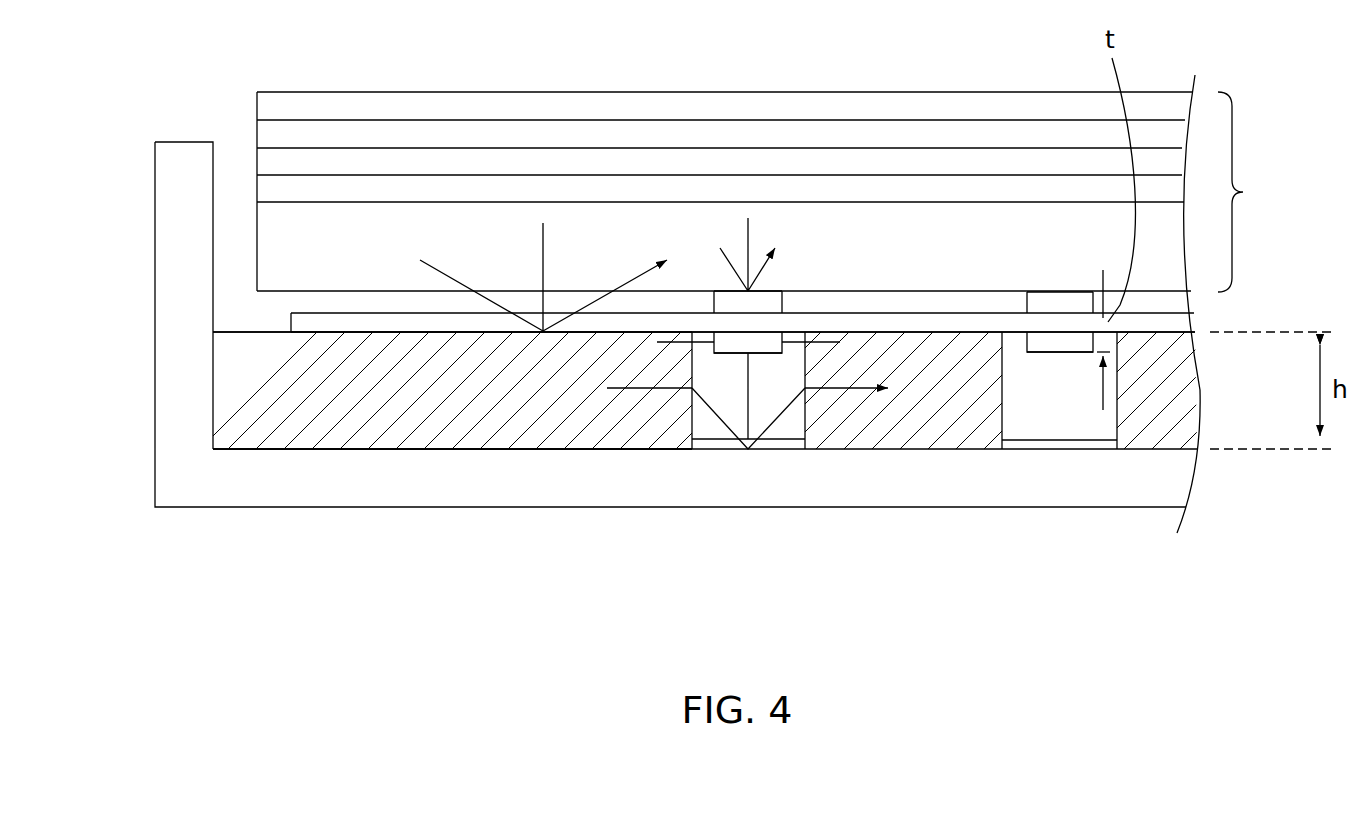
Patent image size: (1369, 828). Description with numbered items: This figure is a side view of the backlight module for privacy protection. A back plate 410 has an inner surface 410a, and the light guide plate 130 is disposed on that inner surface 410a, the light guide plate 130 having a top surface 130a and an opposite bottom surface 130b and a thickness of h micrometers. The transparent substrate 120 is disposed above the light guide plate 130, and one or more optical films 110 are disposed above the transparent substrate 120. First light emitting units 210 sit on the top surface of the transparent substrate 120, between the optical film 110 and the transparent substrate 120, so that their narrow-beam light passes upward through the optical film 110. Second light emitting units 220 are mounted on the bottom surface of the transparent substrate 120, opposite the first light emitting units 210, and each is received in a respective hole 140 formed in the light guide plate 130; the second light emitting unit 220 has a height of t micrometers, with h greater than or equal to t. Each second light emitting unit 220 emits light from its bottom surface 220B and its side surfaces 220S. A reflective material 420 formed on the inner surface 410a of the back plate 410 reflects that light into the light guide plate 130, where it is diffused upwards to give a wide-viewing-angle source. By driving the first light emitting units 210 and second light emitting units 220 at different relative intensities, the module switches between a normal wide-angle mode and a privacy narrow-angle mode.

The optical film 110 is at (778, 192).
The transparent substrate 120 is at (1185, 322).
The light guide plate 130 is at (1180, 390).
The top surface of the light guide plate 130a is at (252, 331).
The bottom surface of the light guide plate 130b is at (250, 451).
The hole 140 is at (708, 422).
The first light emitting unit 210 is at (773, 305).
The second light emitting unit 220 is at (1037, 342).
The side surface of the second light emitting unit 220S is at (708, 337).
The bottom surface of the second light emitting unit 220B is at (732, 353).
The back plate 410 is at (407, 490).
The inner surface of the back plate 410a is at (293, 452).
The reflective material 420 is at (790, 443).